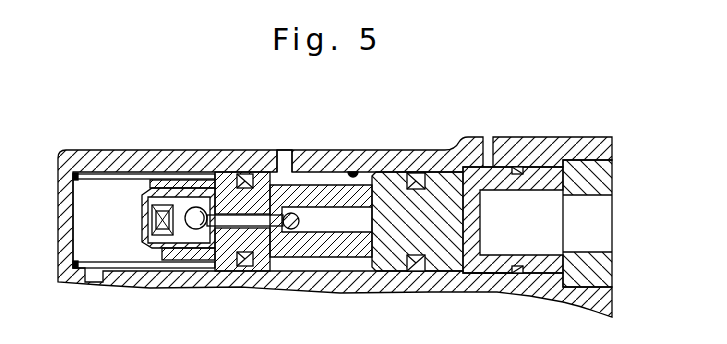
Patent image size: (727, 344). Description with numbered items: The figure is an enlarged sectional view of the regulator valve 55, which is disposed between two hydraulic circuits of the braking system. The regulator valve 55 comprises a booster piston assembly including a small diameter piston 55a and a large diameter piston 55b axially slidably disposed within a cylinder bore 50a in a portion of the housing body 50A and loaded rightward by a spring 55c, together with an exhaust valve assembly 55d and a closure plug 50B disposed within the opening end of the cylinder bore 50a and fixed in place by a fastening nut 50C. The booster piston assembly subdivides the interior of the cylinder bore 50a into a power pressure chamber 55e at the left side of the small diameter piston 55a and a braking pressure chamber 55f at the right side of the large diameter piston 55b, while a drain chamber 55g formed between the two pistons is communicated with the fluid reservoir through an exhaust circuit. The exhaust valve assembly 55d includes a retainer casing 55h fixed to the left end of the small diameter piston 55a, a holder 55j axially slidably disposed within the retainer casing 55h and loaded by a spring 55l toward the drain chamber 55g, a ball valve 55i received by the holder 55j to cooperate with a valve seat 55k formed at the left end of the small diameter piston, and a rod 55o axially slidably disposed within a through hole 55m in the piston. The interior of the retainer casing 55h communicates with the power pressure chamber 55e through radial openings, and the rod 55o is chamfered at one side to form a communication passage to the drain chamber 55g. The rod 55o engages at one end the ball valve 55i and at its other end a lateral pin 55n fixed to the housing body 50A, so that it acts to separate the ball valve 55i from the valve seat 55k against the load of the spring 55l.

The housing body 50A is at (58, 200).
The closure plug 50B is at (538, 162).
The fastening nut 50C is at (606, 173).
The cylinder bore 50a is at (353, 167).
The regulator valve 55 is at (196, 110).
The small diameter piston 55a is at (214, 263).
The large diameter piston 55b is at (391, 263).
The spring 55c is at (96, 164).
The exhaust valve assembly 55d is at (218, 190).
The power pressure chamber 55e is at (83, 234).
The braking pressure chamber 55f is at (491, 273).
The drain chamber 55g is at (341, 266).
The retainer casing 55h is at (153, 196).
The ball valve 55i is at (194, 198).
The holder 55j is at (173, 200).
The valve seat 55k is at (205, 250).
The spring 55l is at (146, 235).
The through hole 55m is at (263, 258).
The lateral pin 55n is at (302, 220).
The rod 55o is at (262, 200).